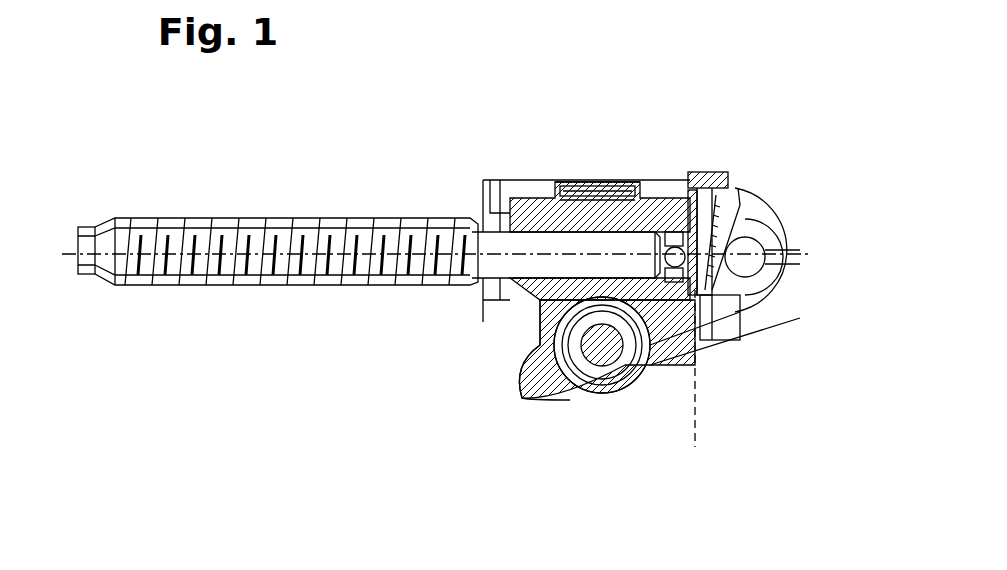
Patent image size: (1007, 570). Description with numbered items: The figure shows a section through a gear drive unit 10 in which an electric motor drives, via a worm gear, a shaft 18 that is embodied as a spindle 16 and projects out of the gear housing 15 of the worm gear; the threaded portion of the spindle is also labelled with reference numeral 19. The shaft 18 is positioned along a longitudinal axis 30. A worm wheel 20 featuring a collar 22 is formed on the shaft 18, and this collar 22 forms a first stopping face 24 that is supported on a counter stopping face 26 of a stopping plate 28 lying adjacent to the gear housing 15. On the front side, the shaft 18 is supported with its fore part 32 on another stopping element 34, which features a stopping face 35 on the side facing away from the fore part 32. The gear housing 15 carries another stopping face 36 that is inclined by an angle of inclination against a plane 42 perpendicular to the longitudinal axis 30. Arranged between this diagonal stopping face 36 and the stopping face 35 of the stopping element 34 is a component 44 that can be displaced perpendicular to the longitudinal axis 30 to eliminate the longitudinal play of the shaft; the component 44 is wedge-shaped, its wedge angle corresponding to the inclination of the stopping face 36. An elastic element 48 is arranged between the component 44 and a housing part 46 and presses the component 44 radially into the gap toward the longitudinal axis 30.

The gear drive unit 10 is at (390, 158).
The longitudinal axis 30 is at (67, 217).
The spindle 16 is at (163, 287).
The thread 19 is at (323, 287).
The shaft 18 is at (478, 283).
The gear housing 15 is at (525, 180).
The worm wheel 20 is at (636, 180).
The collar 22 is at (573, 180).
The first stopping face 24 is at (597, 127).
The fore part 32 is at (682, 183).
The housing part 46 is at (715, 172).
The elastic element 48 is at (723, 195).
The component 44 is at (755, 202).
The stopping face 36 is at (767, 232).
The stopping face 35 is at (762, 318).
The stopping element 34 is at (665, 348).
The plane 42 is at (705, 400).
The stopping plate 28 is at (540, 352).
The counter stopping face 26 is at (563, 388).